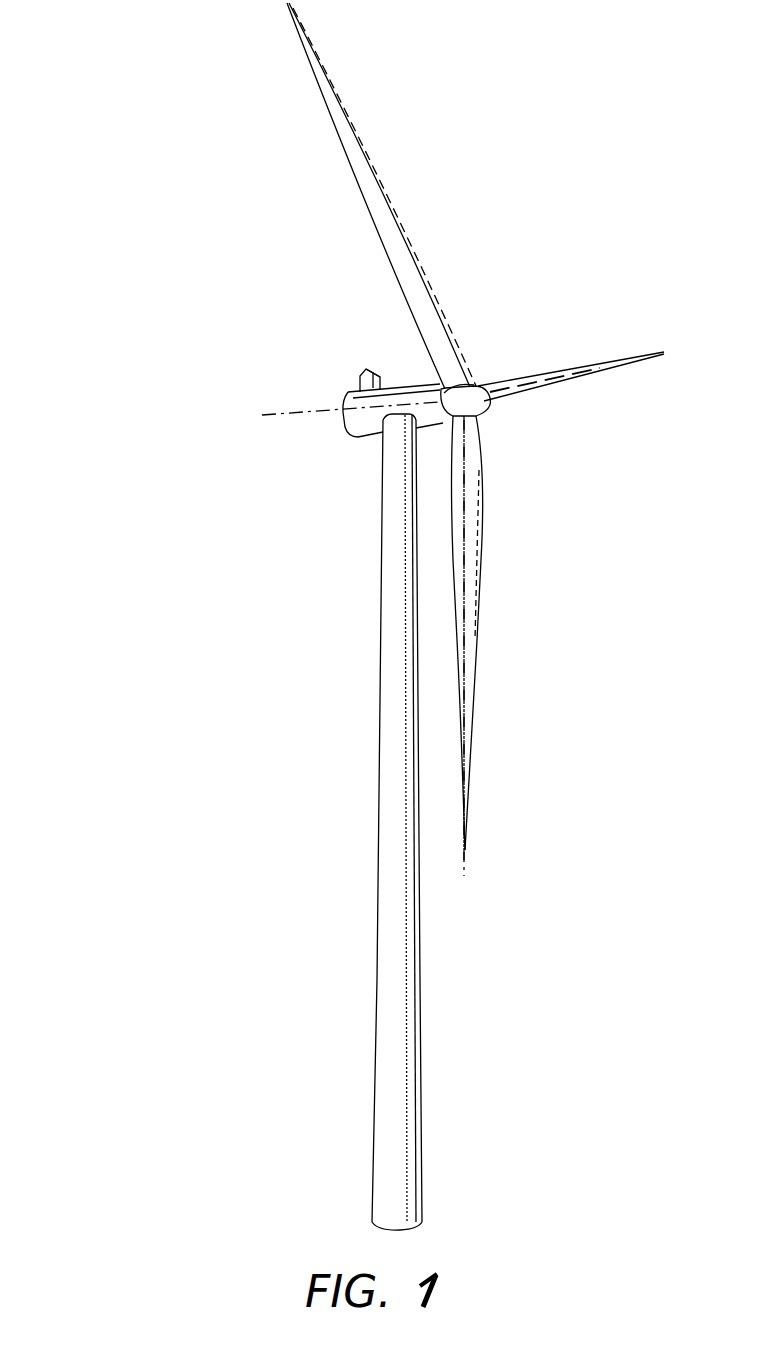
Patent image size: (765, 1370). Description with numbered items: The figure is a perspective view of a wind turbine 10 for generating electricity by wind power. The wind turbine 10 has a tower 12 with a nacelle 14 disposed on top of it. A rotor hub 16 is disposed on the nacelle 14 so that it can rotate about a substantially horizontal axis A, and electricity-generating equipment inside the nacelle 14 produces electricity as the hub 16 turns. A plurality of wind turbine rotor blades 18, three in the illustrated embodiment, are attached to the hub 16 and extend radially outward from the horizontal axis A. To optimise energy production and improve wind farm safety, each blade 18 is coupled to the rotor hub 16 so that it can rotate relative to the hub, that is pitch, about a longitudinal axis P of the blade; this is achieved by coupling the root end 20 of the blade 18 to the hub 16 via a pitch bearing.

The wind turbine 10 is at (166, 405).
The tower 12 is at (377, 810).
The nacelle 14 is at (347, 398).
The rotor hub 16 is at (473, 382).
The wind turbine rotor blades 18 is at (383, 222).
The root end 20 is at (487, 410).
The horizontal axis A is at (283, 414).
The longitudinal axis P is at (467, 527).